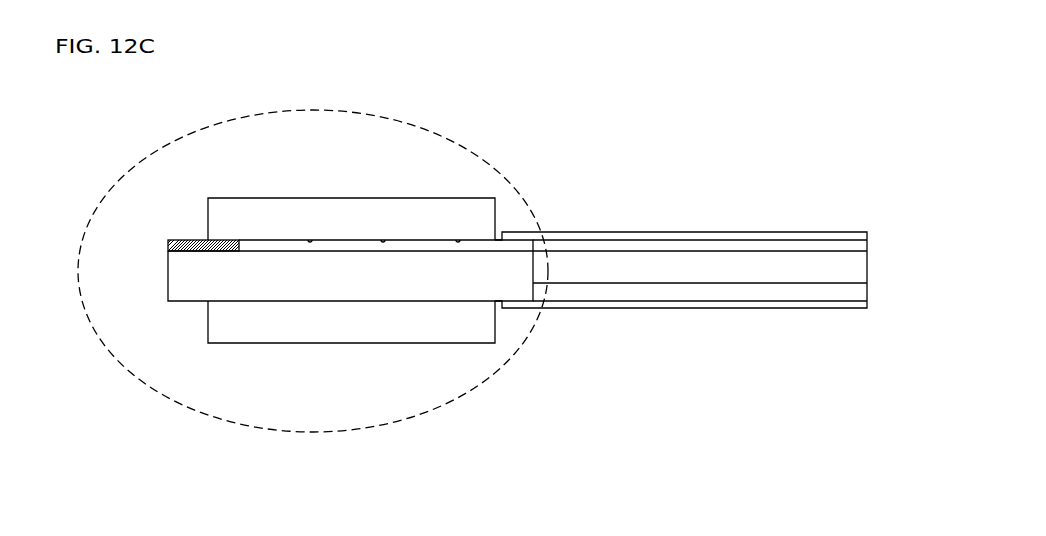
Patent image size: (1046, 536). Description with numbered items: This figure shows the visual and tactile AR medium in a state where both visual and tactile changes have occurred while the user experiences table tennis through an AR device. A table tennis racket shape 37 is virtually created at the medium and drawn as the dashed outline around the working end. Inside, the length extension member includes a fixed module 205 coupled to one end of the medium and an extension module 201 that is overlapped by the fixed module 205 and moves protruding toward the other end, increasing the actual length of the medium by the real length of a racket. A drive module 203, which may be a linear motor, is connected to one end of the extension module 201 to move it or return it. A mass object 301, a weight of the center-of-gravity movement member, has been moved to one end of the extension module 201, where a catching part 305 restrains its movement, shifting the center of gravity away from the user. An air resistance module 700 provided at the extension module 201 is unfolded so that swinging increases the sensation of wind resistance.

The table tennis racket shape 37 is at (308, 448).
The extension module 201 is at (182, 278).
The drive module 203 is at (848, 292).
The fixed module 205 is at (745, 267).
The mass object 301 is at (180, 242).
The catching part 305 is at (237, 243).
The air resistance module 700 is at (332, 218).